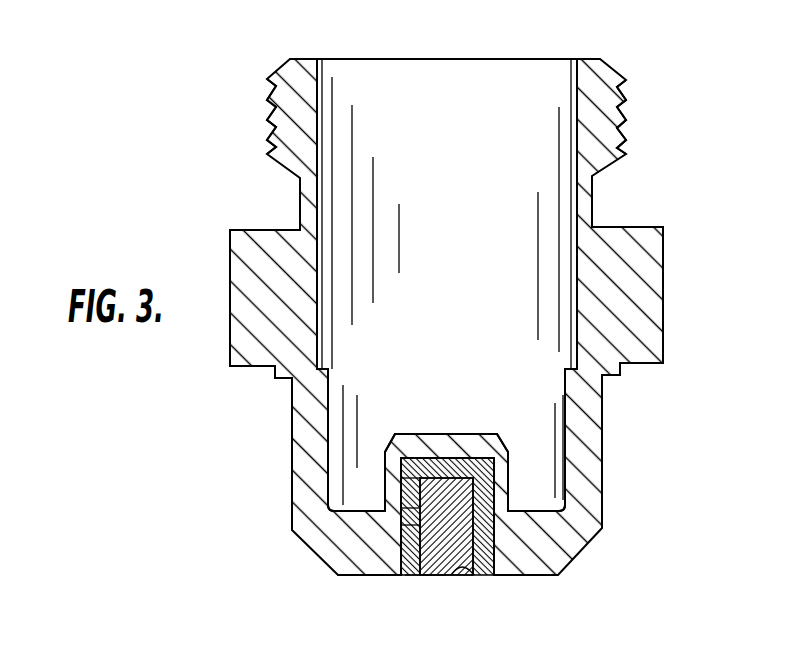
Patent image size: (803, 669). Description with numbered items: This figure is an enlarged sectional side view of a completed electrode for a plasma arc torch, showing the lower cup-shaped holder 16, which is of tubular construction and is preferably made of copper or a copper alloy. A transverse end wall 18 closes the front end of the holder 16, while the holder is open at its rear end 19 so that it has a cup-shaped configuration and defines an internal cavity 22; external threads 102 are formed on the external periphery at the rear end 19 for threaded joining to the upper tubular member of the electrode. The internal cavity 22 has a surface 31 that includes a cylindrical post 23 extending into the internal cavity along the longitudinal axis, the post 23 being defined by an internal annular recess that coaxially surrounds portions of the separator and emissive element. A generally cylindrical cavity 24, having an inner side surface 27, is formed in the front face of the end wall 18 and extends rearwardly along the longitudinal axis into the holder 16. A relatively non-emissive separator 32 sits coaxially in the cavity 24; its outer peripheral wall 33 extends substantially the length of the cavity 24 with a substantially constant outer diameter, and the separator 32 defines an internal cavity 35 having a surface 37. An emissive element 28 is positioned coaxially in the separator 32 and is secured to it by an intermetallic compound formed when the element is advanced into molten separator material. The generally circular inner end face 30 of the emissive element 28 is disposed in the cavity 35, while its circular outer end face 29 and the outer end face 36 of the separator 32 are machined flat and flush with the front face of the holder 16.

The holder 16 is at (240, 184).
The transverse end wall 18 is at (507, 563).
The rear end 19 is at (302, 58).
The external threads 102 is at (622, 116).
The internal cavity 22 is at (548, 125).
The surface 31 is at (317, 133).
The cylindrical post 23 is at (468, 433).
The inner side surface 27 is at (492, 496).
The emissive element 28 is at (382, 576).
The cavity 24 is at (493, 563).
The inner end face 30 is at (440, 458).
The outer peripheral wall 33 is at (432, 494).
The surface 37 is at (426, 512).
The separator 32 is at (420, 525).
The outer end face 36 is at (412, 576).
The outer end face 29 is at (432, 576).
The internal cavity 35 is at (457, 576).